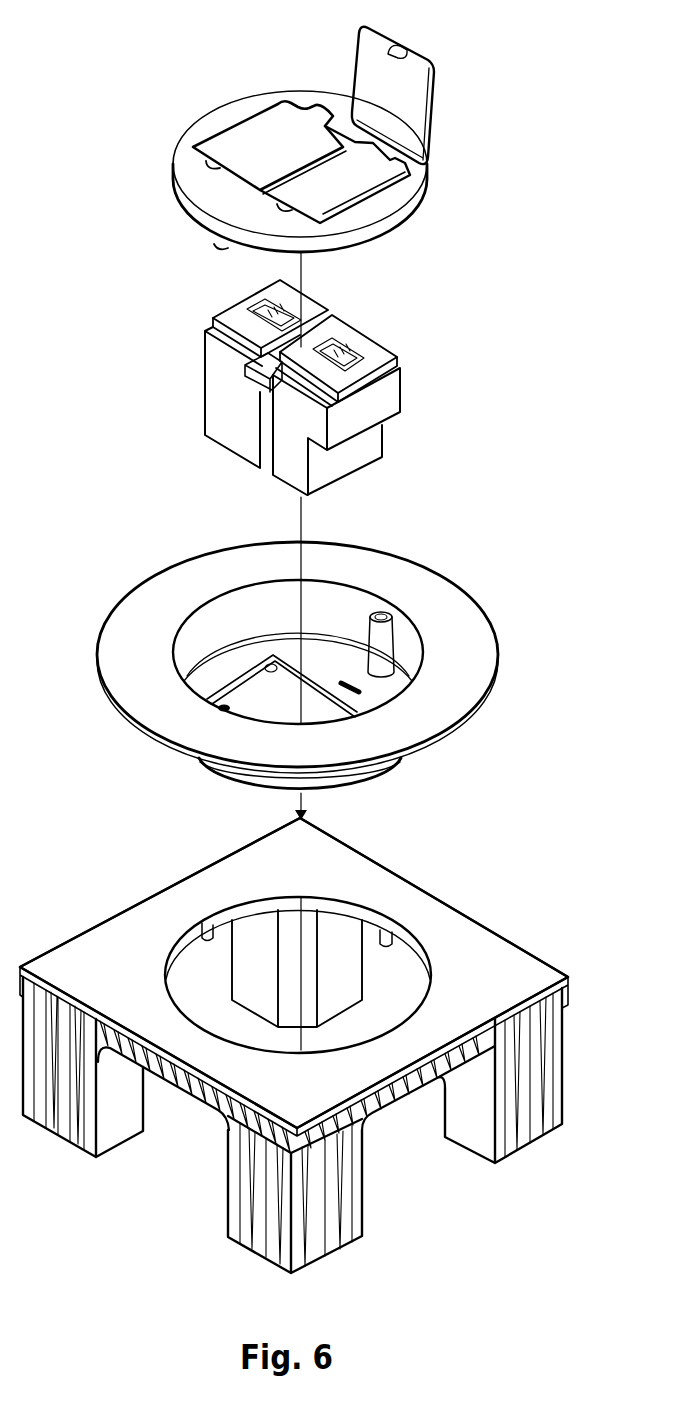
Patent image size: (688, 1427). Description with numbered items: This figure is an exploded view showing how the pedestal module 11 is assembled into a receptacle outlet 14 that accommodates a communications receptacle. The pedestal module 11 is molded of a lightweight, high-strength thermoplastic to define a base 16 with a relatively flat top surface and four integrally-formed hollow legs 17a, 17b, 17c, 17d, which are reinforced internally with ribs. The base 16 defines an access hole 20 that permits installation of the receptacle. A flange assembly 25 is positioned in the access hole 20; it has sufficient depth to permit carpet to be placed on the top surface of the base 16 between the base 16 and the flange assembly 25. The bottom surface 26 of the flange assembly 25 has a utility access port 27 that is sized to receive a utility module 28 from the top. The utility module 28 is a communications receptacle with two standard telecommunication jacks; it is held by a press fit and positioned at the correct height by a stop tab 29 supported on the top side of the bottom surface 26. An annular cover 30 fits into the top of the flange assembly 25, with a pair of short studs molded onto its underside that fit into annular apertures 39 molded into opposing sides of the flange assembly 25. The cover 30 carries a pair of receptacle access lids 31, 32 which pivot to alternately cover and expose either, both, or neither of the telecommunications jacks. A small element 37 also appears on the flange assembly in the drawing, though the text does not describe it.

The pedestal module 11 is at (517, 985).
The receptacle outlet 14 is at (316, 1046).
The base 16 is at (118, 986).
The leg 17a is at (540, 1118).
The leg 17b is at (345, 1228).
The leg 17c is at (117, 1118).
The leg 17d is at (260, 952).
The access hole 20 is at (411, 937).
The flange assembly 25 is at (470, 670).
The bottom surface 26 is at (388, 693).
The utility access port 27 is at (266, 658).
The utility module 28 is at (382, 397).
The stop tab 29 is at (258, 381).
The annular cover 30 is at (402, 220).
The receptacle access lid 31 is at (413, 110).
The receptacle access lid 32 is at (254, 138).
The stop bar 37 is at (354, 681).
The annular apertures 39 is at (378, 613).